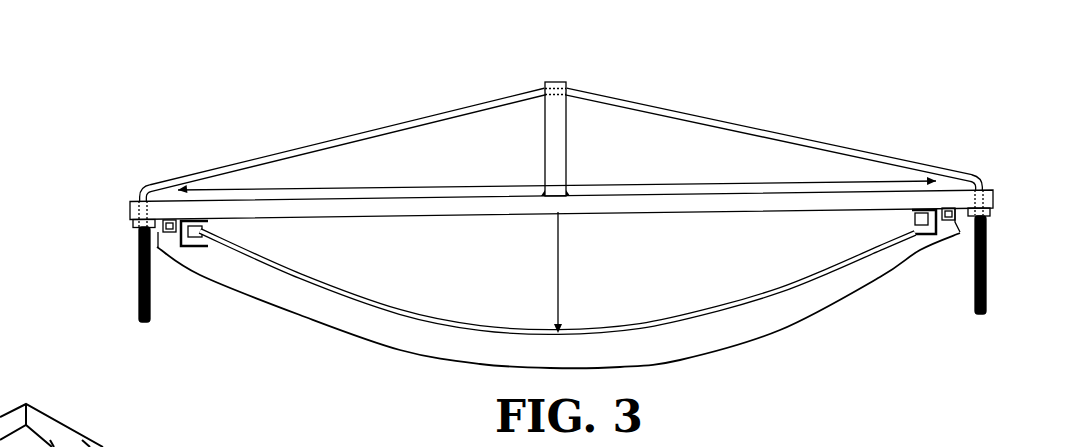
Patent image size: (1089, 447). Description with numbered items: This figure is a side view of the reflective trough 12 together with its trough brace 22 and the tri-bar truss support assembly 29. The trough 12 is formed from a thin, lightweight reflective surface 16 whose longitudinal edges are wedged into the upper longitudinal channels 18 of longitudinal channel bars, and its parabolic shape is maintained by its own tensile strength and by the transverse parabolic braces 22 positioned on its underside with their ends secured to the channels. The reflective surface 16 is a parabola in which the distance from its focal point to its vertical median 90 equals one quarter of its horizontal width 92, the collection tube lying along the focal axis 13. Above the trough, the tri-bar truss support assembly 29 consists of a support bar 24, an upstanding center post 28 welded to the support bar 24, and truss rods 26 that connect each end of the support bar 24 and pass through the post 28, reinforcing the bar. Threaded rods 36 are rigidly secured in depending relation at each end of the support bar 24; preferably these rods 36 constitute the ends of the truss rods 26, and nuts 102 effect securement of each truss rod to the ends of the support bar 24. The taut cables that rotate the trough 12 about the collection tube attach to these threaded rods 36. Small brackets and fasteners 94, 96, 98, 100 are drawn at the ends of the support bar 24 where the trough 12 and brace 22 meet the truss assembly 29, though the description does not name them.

The parabolic reflective trough 12 is at (558, 299).
The focal axis 13 is at (562, 212).
The reflective surface 16 is at (662, 310).
The upper longitudinal channels 18 is at (930, 208).
The transverse parabolic brace 22 is at (824, 316).
The support bar 24 is at (440, 214).
The truss rod 26 is at (283, 152).
The center post 28 is at (556, 82).
The tri-bar truss support assembly 29 is at (562, 134).
The threaded rod 36 is at (140, 268).
The vertical median 90 is at (573, 272).
The horizontal width 92 is at (576, 175).
The bracket 94 is at (212, 233).
The tab 96 is at (932, 216).
The fastener 98 is at (204, 222).
The clip 100 is at (160, 250).
The nut 102 is at (992, 211).